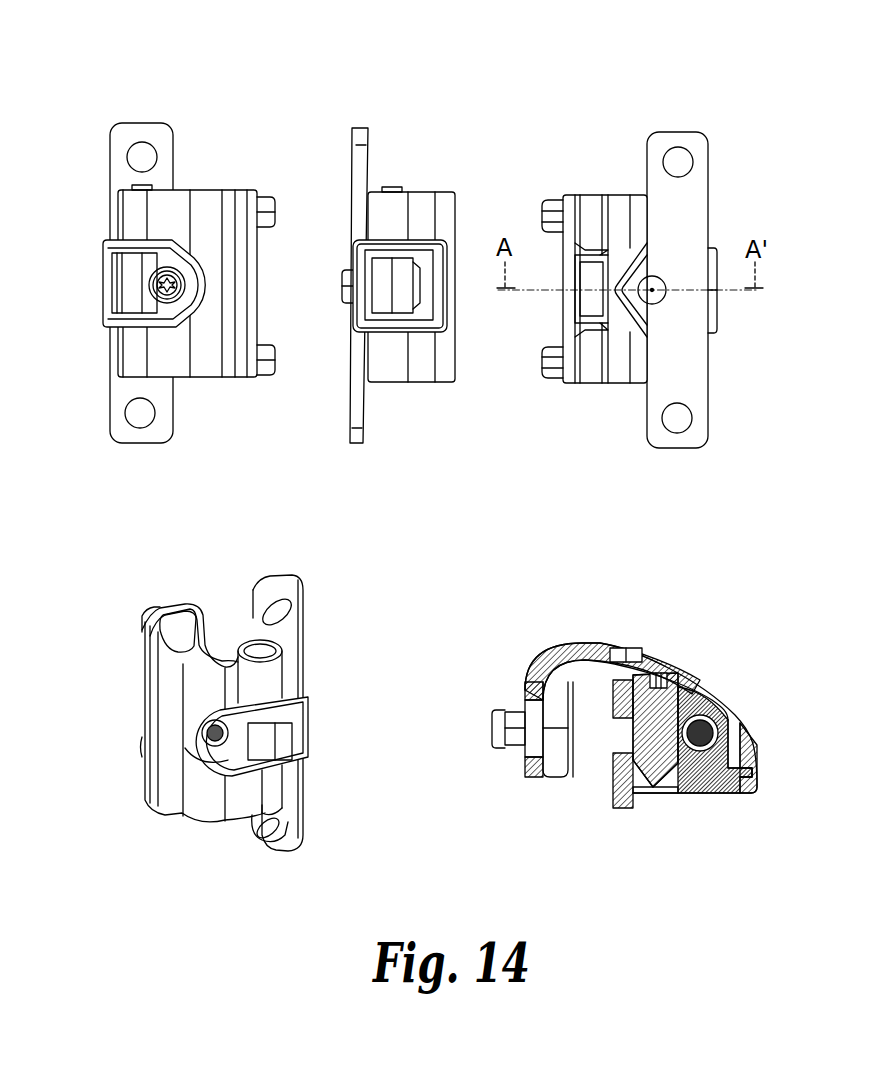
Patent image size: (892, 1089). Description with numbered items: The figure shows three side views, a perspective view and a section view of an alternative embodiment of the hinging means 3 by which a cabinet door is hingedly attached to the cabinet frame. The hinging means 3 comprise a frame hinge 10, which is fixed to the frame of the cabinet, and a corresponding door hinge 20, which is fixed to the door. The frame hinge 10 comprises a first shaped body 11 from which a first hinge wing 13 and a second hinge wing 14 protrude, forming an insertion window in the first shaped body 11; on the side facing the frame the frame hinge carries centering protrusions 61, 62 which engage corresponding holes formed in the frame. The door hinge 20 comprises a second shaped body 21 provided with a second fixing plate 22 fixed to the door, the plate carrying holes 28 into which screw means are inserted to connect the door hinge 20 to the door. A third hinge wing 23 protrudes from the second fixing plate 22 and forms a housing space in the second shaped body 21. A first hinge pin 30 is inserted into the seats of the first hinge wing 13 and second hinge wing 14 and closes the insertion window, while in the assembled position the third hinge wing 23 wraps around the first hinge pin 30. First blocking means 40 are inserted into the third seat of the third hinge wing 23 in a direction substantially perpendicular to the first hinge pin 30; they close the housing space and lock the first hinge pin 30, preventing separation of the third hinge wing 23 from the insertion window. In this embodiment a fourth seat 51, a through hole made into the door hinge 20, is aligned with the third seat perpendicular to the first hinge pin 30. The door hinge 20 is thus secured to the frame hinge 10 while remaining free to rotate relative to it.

The hinging means 3 is at (95, 95).
The frame hinge 10 is at (540, 628).
The first shaped body 11 is at (208, 333).
The first hinge wing 13 is at (392, 228).
The second hinge wing 14 is at (398, 357).
The door hinge 20 is at (745, 812).
The second shaped body 21 is at (152, 110).
The second fixing plate 22 is at (122, 425).
The third hinge wing 23 is at (157, 310).
The holes 28 is at (150, 160).
The first hinge pin 30 is at (718, 728).
The first blocking means 40 is at (150, 263).
The fourth seat 51 is at (655, 790).
The centering protrusion 61 is at (553, 210).
The centering protrusion 62 is at (553, 383).